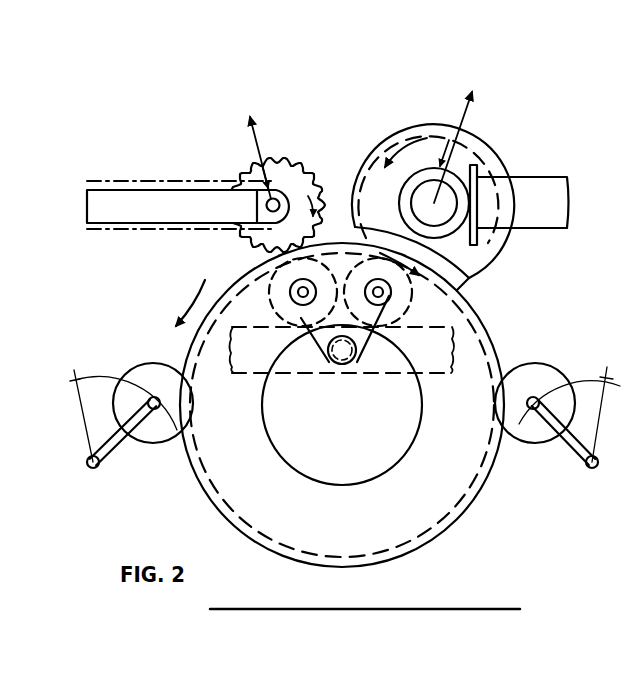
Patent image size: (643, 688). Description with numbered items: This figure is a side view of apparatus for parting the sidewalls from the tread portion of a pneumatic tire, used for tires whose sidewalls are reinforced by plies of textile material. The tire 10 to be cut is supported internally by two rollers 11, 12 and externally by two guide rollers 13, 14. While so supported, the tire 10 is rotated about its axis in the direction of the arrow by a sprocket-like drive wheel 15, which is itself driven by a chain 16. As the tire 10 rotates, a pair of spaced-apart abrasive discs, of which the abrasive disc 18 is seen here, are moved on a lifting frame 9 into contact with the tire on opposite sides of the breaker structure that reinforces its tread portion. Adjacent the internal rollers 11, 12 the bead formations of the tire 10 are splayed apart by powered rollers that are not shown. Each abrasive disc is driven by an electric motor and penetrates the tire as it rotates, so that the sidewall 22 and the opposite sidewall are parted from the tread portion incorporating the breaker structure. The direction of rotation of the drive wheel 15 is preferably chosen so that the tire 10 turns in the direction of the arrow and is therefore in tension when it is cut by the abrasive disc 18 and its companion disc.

The lifting frame 9 is at (527, 228).
The tire 10 is at (485, 318).
The roller 11 is at (275, 303).
The roller 12 is at (405, 306).
The guide roller 13 is at (146, 372).
The guide roller 14 is at (557, 375).
The sprocket-like drive wheel 15 is at (309, 168).
The chain 16 is at (147, 230).
The abrasive disc 18 is at (468, 152).
The sidewall 22 is at (387, 538).